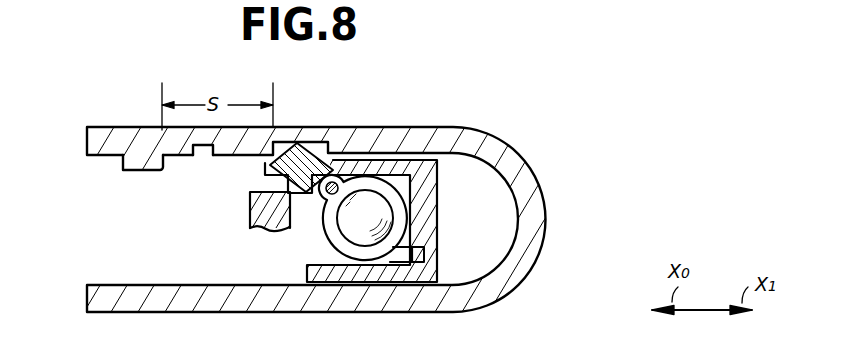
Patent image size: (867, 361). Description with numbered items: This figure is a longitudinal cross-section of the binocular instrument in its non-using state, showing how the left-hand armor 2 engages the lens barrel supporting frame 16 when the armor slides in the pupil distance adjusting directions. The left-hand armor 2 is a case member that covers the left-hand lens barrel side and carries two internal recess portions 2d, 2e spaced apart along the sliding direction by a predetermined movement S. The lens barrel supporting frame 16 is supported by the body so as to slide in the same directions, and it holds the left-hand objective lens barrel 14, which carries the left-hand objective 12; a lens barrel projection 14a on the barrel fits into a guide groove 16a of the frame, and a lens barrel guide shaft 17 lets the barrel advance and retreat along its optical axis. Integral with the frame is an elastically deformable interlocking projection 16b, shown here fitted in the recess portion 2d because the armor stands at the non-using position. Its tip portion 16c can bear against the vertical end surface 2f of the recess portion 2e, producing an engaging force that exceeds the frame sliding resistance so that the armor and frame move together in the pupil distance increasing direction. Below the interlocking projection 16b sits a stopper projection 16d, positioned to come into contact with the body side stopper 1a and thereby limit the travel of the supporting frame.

The left-hand armor 2 is at (532, 167).
The recess portion 2d is at (280, 142).
The recess portion 2e is at (193, 152).
The vertical end surface 2f is at (160, 170).
The lens barrel supporting frame 16 is at (440, 180).
The guide groove 16a is at (425, 252).
The interlocking projection 16b is at (302, 150).
The tip portion 16c is at (265, 165).
The stopper projection 16d is at (247, 188).
The body side stopper 1a is at (260, 230).
The left-hand objective lens barrel 14 is at (400, 216).
The lens barrel projection 14a is at (410, 263).
The left-hand objective 12 is at (364, 232).
The lens barrel guide shaft 17 is at (343, 182).